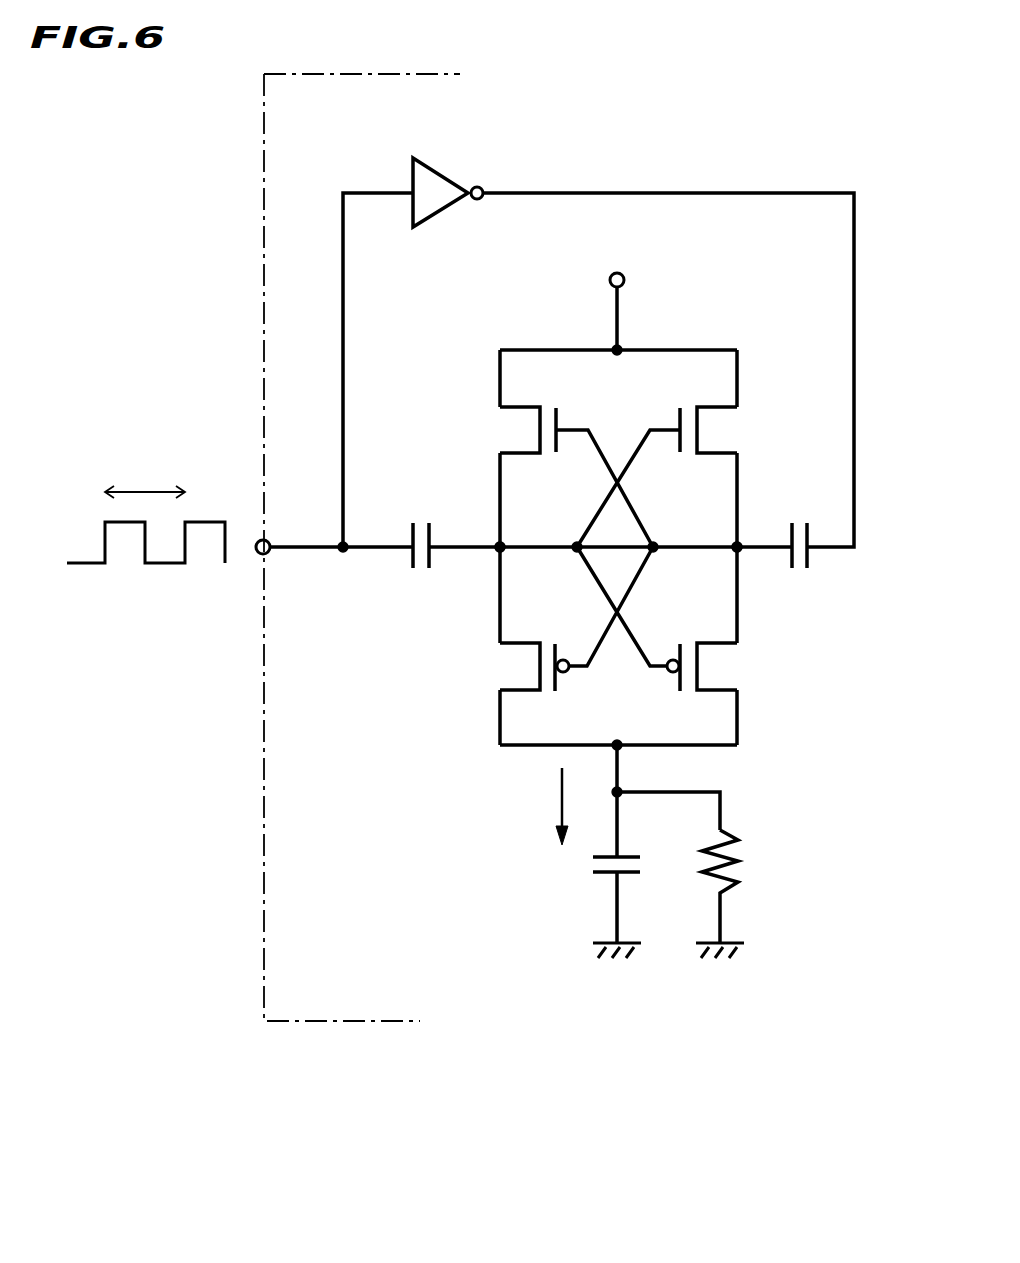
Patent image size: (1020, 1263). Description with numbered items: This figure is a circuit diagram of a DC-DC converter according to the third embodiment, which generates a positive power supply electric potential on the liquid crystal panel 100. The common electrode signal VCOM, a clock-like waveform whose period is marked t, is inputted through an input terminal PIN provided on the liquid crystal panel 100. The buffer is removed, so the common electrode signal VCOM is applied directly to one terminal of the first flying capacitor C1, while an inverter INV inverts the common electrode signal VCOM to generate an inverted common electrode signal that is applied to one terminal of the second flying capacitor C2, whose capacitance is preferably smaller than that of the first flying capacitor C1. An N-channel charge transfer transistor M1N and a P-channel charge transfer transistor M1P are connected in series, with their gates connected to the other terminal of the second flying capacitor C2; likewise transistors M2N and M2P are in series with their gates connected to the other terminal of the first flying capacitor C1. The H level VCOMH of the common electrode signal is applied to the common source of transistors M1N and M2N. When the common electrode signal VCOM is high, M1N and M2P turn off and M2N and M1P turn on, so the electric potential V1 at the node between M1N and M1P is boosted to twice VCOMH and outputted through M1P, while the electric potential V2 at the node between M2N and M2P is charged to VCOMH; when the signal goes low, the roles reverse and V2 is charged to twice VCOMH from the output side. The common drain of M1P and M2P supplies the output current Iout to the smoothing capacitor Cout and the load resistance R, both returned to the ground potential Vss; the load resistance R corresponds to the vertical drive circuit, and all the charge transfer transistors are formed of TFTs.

The liquid crystal panel 100 is at (318, 1006).
The common electrode signal VCOM is at (146, 567).
The period t is at (145, 477).
The input terminal PIN is at (268, 553).
The inverter INV is at (450, 170).
The H level of the common electrode signal VCOMH is at (619, 292).
The N-channel type charge transfer transistor M1N is at (507, 422).
The N-channel type charge transfer transistor M2N is at (733, 422).
The P-channel type charge transfer transistor M1P is at (505, 667).
The P-channel type charge transfer transistor M2P is at (733, 667).
The first flying capacitor C1 is at (416, 522).
The second flying capacitor C2 is at (797, 522).
The electric potential at connecting node between M1N and M1P V1 is at (497, 551).
The electric potential at connecting node between M2N and M2P V2 is at (742, 552).
The output current Iout is at (533, 806).
The smoothing capacitor Cout is at (585, 863).
The load resistance R is at (748, 863).
The ground potential Vss is at (667, 973).